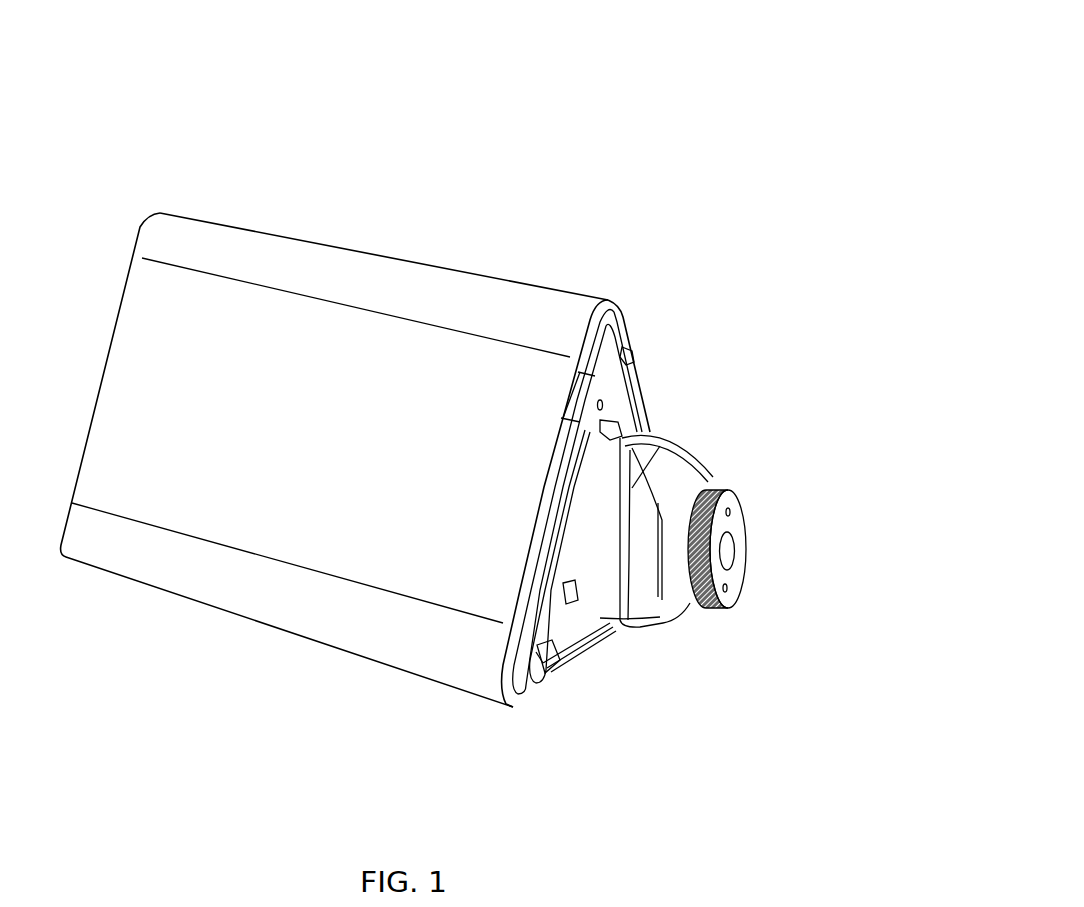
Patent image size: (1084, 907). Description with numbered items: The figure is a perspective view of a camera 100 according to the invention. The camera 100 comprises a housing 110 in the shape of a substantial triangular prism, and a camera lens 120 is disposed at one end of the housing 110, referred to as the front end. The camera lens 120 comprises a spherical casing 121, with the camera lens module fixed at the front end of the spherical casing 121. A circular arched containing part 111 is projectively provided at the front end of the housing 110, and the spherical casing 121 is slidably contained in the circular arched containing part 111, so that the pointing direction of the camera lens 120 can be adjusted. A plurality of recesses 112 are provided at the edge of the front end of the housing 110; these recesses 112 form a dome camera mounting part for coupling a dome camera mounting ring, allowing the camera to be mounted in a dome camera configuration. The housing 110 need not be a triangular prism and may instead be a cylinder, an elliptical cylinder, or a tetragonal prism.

The camera 100 is at (730, 53).
The housing 110 is at (312, 268).
The circular arched containing part 111 is at (602, 593).
The recesses 112 is at (573, 402).
The camera lens 120 is at (722, 547).
The spherical casing 121 is at (698, 482).